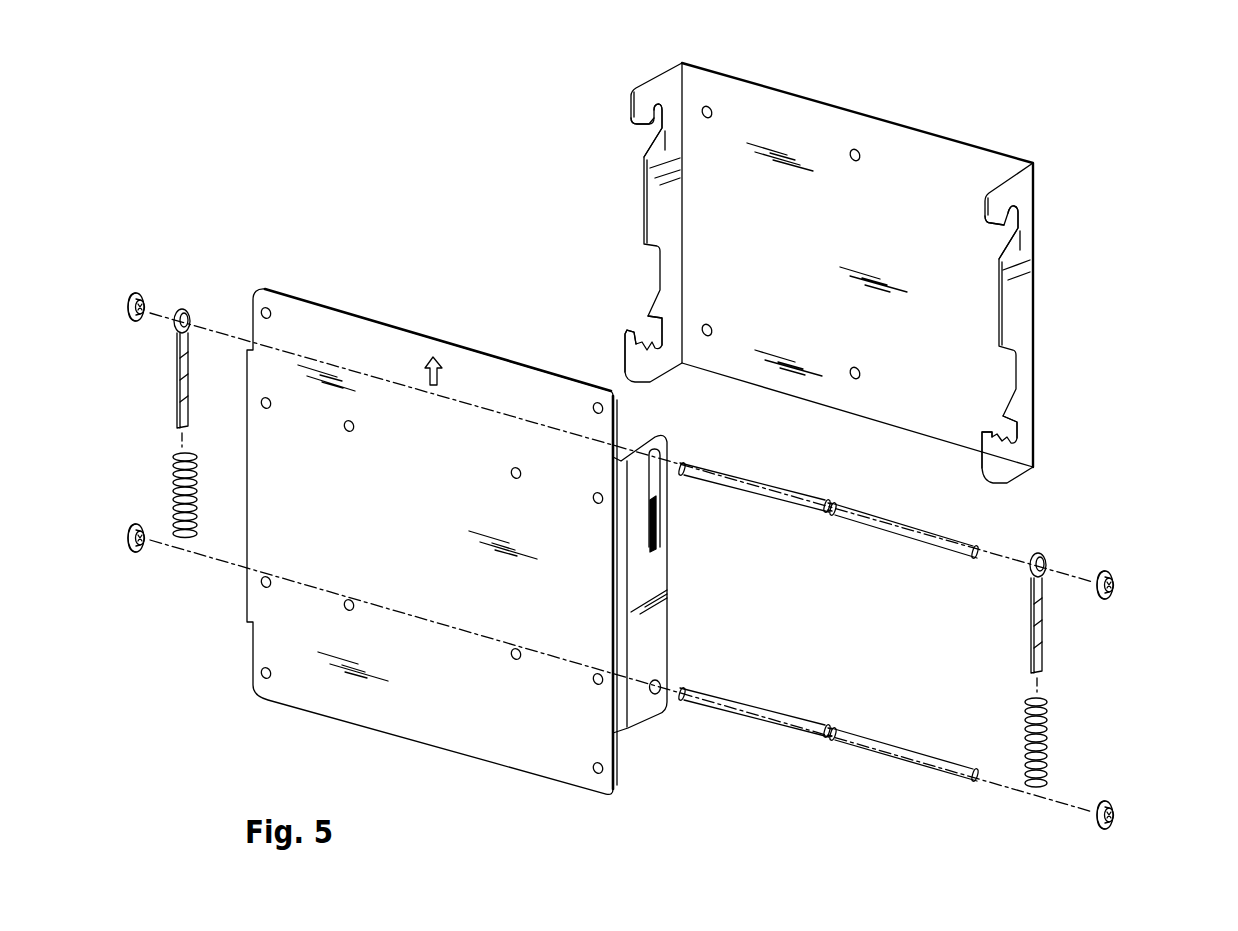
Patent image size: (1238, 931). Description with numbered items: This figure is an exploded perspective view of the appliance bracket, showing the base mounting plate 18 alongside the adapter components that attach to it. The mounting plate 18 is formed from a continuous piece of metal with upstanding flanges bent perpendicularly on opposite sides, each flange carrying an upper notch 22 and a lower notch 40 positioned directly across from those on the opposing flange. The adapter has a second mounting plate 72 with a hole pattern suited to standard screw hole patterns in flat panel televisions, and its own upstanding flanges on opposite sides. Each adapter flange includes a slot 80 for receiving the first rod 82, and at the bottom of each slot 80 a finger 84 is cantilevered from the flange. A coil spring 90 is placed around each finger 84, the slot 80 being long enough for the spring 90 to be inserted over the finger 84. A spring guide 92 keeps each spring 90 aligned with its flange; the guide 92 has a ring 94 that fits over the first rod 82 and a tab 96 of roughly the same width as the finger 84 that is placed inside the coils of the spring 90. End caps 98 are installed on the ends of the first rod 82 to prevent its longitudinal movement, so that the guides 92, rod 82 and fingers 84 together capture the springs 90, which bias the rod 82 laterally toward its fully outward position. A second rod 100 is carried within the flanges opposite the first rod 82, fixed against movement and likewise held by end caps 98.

The mounting plate 18 is at (937, 155).
The upper notch 22 is at (653, 130).
The lower hook 40 is at (643, 327).
The second mounting plate 72 is at (377, 345).
The slot 80 is at (653, 478).
The first rod 82 is at (877, 525).
The finger 84 is at (655, 528).
The coil spring 90 is at (173, 475).
The spring guide 92 is at (176, 395).
The ring 94 is at (188, 316).
The tab 96 is at (177, 380).
The end cap 98 is at (130, 294).
The second rod 100 is at (900, 745).